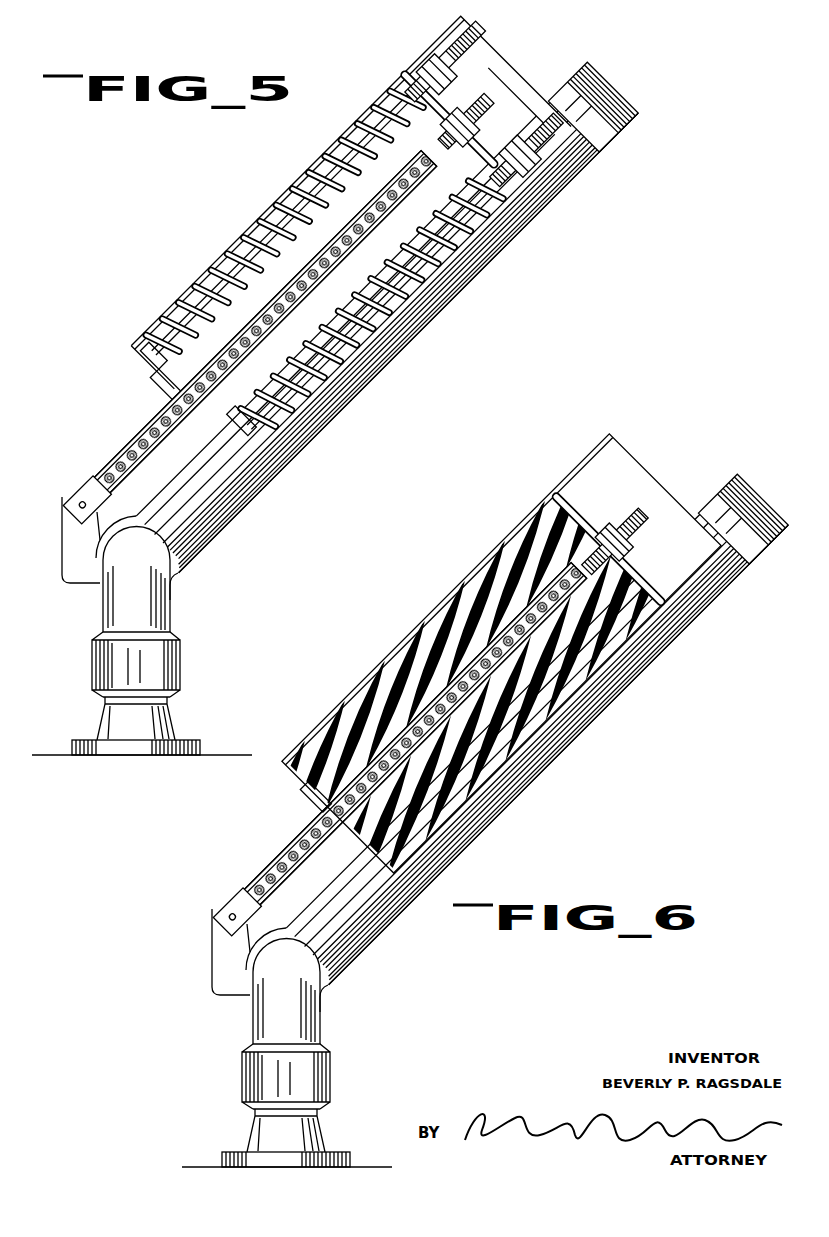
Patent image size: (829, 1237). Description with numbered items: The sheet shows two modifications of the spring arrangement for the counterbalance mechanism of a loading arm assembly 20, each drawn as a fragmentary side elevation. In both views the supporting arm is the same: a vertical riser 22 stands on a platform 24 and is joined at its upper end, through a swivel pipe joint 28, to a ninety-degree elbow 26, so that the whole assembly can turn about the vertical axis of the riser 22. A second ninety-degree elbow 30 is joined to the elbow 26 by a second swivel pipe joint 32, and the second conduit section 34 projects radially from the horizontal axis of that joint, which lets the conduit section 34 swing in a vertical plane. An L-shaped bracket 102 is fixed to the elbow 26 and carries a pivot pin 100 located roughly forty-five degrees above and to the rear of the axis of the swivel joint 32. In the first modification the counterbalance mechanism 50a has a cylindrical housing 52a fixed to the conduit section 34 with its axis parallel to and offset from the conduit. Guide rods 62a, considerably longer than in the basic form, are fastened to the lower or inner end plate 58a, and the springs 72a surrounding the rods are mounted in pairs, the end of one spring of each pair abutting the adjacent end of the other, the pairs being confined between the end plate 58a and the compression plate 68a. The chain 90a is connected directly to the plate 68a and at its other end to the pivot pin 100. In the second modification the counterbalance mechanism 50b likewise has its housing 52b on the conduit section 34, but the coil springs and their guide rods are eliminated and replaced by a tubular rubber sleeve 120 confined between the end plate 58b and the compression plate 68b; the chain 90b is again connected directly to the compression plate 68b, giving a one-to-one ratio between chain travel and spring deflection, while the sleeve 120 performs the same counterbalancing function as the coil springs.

In FIG. 5, the loading arm assembly 20 is at (248, 530).
In FIG. 6, the loading arm assembly 20 is at (490, 850).
In FIG. 5, the riser 22 is at (123, 718).
In FIG. 6, the riser 22 is at (280, 1127).
In FIG. 5, the platform 24 is at (215, 753).
In FIG. 6, the platform 24 is at (192, 1166).
In FIG. 5, the ninety-degree elbow 26 is at (130, 607).
In FIG. 6, the ninety-degree elbow 26 is at (280, 1015).
In FIG. 5, the swivel pipe joint 28 is at (117, 665).
In FIG. 6, the swivel pipe joint 28 is at (268, 1083).
In FIG. 5, the second ninety-degree elbow 30 is at (194, 562).
In FIG. 6, the second ninety-degree elbow 30 is at (346, 978).
In FIG. 5, the swivel pipe joint 32 is at (175, 576).
In FIG. 6, the swivel pipe joint 32 is at (325, 994).
In FIG. 5, the second conduit section 34 is at (400, 354).
In FIG. 6, the second conduit section 34 is at (515, 798).
In FIG. 5, the counterbalance mechanism 50a is at (274, 193).
In FIG. 6, the counterbalance mechanism 50b is at (462, 570).
In FIG. 5, the cylindrical housing 52a is at (337, 143).
In FIG. 6, the cylindrical housing 52b is at (370, 677).
In FIG. 5, the end plate 58a is at (160, 385).
In FIG. 6, the end plate 58b is at (307, 790).
In FIG. 5, the guide rods 62a is at (237, 247).
In FIG. 5, the compression plate 68a is at (440, 100).
In FIG. 6, the compression plate 68b is at (590, 517).
In FIG. 5, the springs 72a is at (387, 108).
In FIG. 5, the chain 90a is at (147, 433).
In FIG. 6, the chain 90b is at (300, 848).
In FIG. 5, the pivot pin 100 is at (78, 506).
In FIG. 6, the pivot pin 100 is at (227, 920).
In FIG. 5, the L-shaped bracket 102 is at (83, 545).
In FIG. 6, the L-shaped bracket 102 is at (230, 955).
In FIG. 6, the tubular rubber sleeve 120 is at (460, 622).